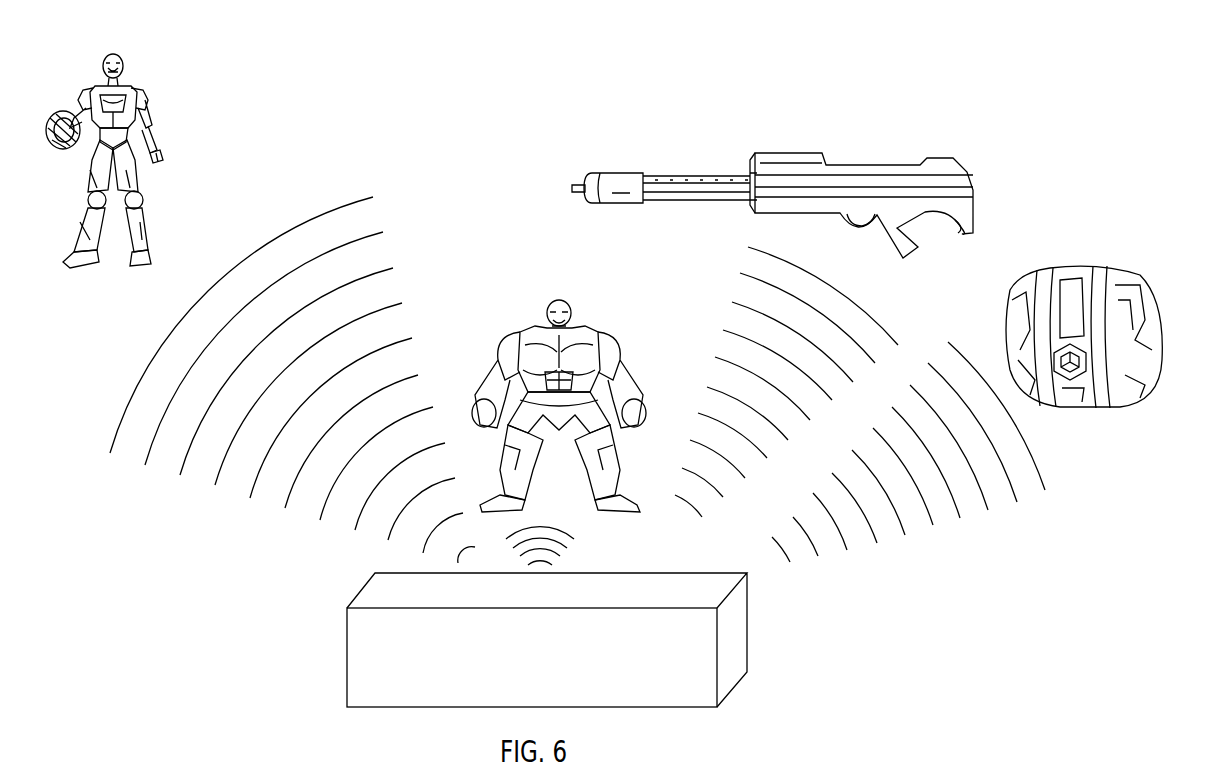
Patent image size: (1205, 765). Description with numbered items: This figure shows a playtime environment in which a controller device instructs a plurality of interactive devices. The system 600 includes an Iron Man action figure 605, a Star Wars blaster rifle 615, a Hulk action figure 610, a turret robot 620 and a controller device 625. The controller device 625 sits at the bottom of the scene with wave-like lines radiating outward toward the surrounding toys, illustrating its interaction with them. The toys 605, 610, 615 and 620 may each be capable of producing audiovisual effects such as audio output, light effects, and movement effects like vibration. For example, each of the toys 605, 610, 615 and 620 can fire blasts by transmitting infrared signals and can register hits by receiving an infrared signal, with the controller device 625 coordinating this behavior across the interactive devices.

The system 600 is at (548, 40).
The Iron Man action figure 605 is at (147, 75).
The Hulk action figure 610 is at (557, 285).
The Star Wars blaster rifle 615 is at (787, 152).
The turret robot 620 is at (1127, 278).
The controller device 625 is at (542, 678).